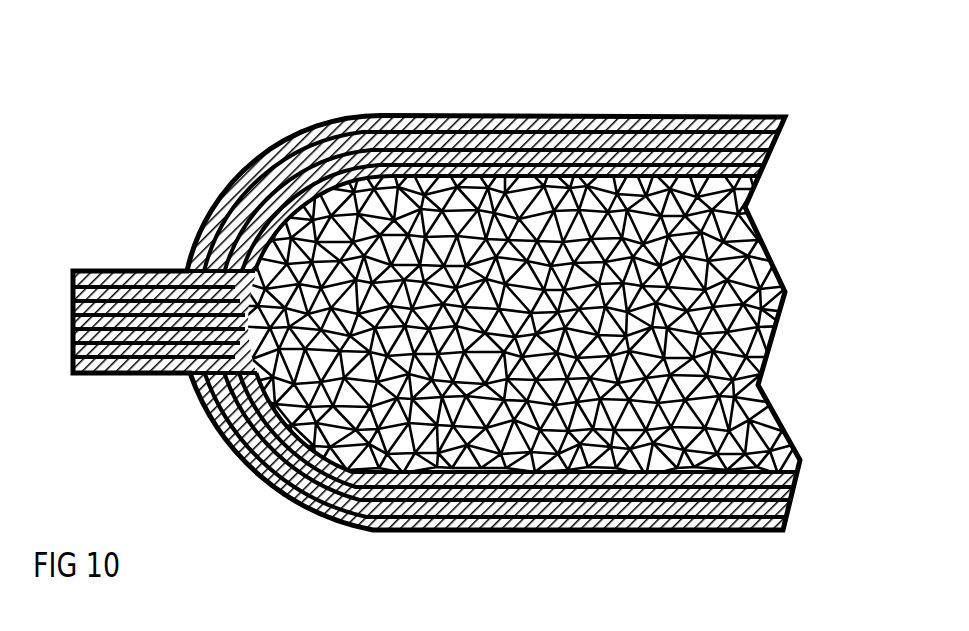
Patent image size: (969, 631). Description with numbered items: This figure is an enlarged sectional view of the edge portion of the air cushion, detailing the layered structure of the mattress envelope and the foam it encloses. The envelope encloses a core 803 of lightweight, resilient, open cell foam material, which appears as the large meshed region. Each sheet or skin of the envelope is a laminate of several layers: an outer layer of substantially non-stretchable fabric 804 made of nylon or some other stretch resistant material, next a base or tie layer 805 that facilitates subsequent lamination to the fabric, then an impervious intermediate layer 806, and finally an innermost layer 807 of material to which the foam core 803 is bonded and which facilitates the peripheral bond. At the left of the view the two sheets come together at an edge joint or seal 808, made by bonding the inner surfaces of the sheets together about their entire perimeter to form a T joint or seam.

The core 803 is at (760, 275).
The substantially non-stretchable fabric 804 is at (554, 115).
The base or tie layer 805 is at (782, 130).
The impervious intermediate layer 806 is at (775, 152).
The innermost layer 807 is at (767, 170).
The edge joint or seal 808 is at (129, 232).